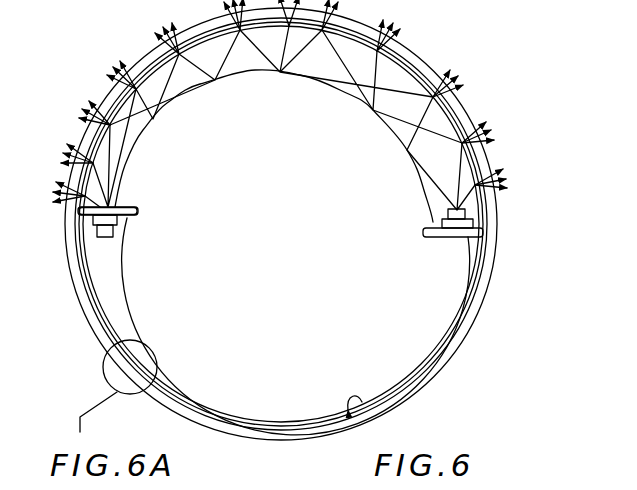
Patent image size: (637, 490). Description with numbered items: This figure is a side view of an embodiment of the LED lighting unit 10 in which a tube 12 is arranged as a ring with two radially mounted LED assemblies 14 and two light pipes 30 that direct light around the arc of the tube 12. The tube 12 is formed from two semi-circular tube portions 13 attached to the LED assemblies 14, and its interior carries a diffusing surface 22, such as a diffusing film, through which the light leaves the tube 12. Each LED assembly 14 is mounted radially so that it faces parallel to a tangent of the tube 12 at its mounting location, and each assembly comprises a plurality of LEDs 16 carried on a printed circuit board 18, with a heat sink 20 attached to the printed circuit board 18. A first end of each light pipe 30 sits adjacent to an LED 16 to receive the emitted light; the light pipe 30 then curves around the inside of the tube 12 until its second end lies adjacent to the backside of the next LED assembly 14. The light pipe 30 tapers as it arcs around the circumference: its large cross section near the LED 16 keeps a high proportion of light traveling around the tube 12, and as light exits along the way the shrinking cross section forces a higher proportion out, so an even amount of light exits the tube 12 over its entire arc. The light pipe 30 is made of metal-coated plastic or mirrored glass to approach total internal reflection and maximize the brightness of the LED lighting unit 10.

The LED lighting unit 10 is at (88, 70).
The tube 12 is at (500, 279).
The tube portions 13 is at (483, 313).
The LED assembly 14 is at (143, 210).
The LEDs 16 is at (108, 238).
The printed circuit board 18 is at (90, 217).
The heat sink 20 is at (113, 205).
The diffusing surface 22 is at (393, 406).
The light pipe 30 is at (453, 360).